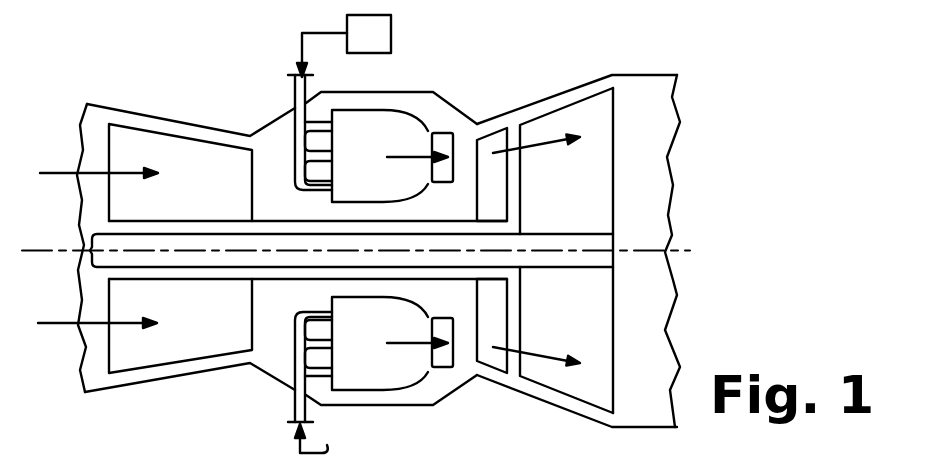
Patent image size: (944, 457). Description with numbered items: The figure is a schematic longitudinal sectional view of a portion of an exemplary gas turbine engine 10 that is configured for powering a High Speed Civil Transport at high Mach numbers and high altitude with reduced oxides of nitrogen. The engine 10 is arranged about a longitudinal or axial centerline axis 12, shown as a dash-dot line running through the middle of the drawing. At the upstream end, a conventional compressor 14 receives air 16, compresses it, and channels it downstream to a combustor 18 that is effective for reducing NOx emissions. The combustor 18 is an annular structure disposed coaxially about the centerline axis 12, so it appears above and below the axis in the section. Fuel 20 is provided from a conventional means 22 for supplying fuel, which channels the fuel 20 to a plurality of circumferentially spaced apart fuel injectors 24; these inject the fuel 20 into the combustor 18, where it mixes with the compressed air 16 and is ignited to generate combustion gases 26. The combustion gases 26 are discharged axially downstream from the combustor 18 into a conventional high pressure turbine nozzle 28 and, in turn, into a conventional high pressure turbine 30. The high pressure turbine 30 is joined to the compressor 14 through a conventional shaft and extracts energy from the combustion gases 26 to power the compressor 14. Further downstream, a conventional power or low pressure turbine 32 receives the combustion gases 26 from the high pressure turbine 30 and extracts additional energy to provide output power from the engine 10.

The gas turbine engine 10 is at (451, 86).
The centerline axis 12 is at (625, 251).
The compressor 14 is at (223, 193).
The air 16 is at (48, 173).
The combustor 18 is at (398, 110).
The fuel 20 is at (302, 45).
The means for supplying fuel 22 is at (381, 46).
The fuel injectors 24 is at (295, 142).
The combustion gases 26 is at (410, 158).
The high pressure turbine nozzle 28 is at (461, 137).
The high pressure turbine 30 is at (513, 118).
The low pressure turbine 32 is at (617, 97).